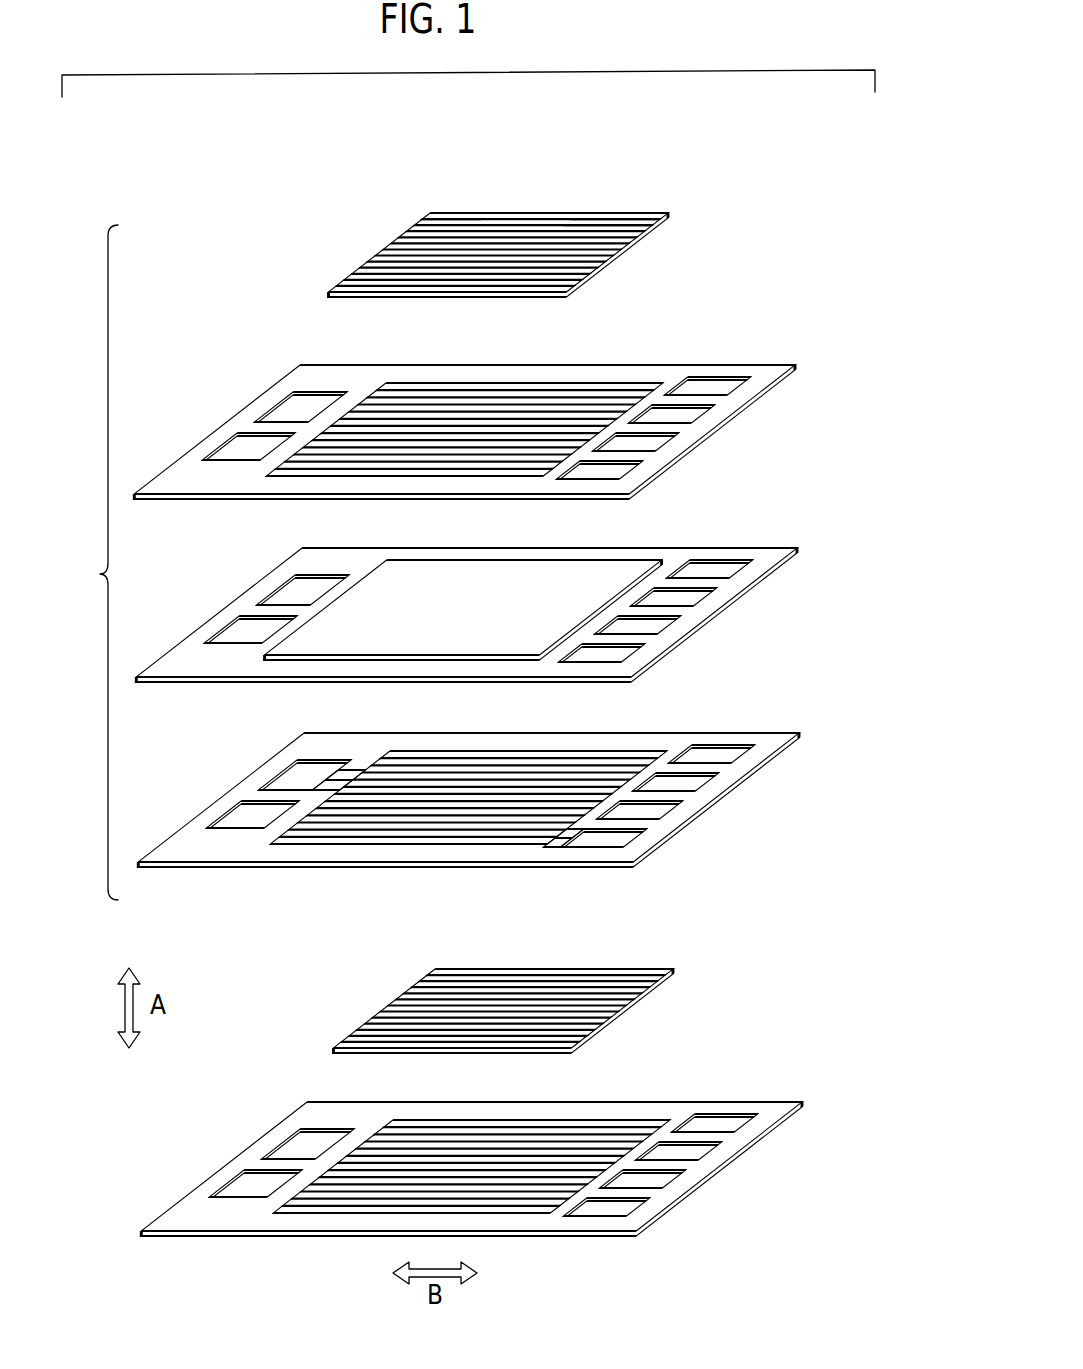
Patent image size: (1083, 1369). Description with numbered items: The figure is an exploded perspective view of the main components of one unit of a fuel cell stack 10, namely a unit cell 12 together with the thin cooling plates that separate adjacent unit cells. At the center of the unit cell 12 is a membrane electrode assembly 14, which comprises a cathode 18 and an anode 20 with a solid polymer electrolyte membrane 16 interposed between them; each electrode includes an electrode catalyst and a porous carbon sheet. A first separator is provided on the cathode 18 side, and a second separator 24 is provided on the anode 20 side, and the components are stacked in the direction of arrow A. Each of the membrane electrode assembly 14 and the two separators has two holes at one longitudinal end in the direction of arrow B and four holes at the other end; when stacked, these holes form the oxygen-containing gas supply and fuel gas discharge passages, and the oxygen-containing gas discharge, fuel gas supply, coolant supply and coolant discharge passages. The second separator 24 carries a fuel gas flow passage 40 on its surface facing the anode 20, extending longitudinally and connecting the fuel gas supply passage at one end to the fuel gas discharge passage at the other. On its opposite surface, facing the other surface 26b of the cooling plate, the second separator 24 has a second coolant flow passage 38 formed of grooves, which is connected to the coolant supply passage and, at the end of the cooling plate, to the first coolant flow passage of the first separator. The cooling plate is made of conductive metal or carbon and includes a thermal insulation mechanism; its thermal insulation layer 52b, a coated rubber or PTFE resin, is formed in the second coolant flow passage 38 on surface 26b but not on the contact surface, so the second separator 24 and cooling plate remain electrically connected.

The fuel cell stack 10 is at (369, 135).
The unit cell 12 is at (86, 562).
The membrane electrode assembly 14 is at (500, 611).
The solid polymer electrolyte membrane 16 is at (674, 565).
The cathode 18 is at (497, 576).
The anode 20 is at (447, 642).
The second separator 24 is at (501, 794).
The other surface of the cooling plate 26b is at (442, 218).
The second coolant flow passage 38 is at (460, 810).
The fuel gas flow passage 40 is at (556, 770).
The thermal insulation layer 52b is at (611, 225).